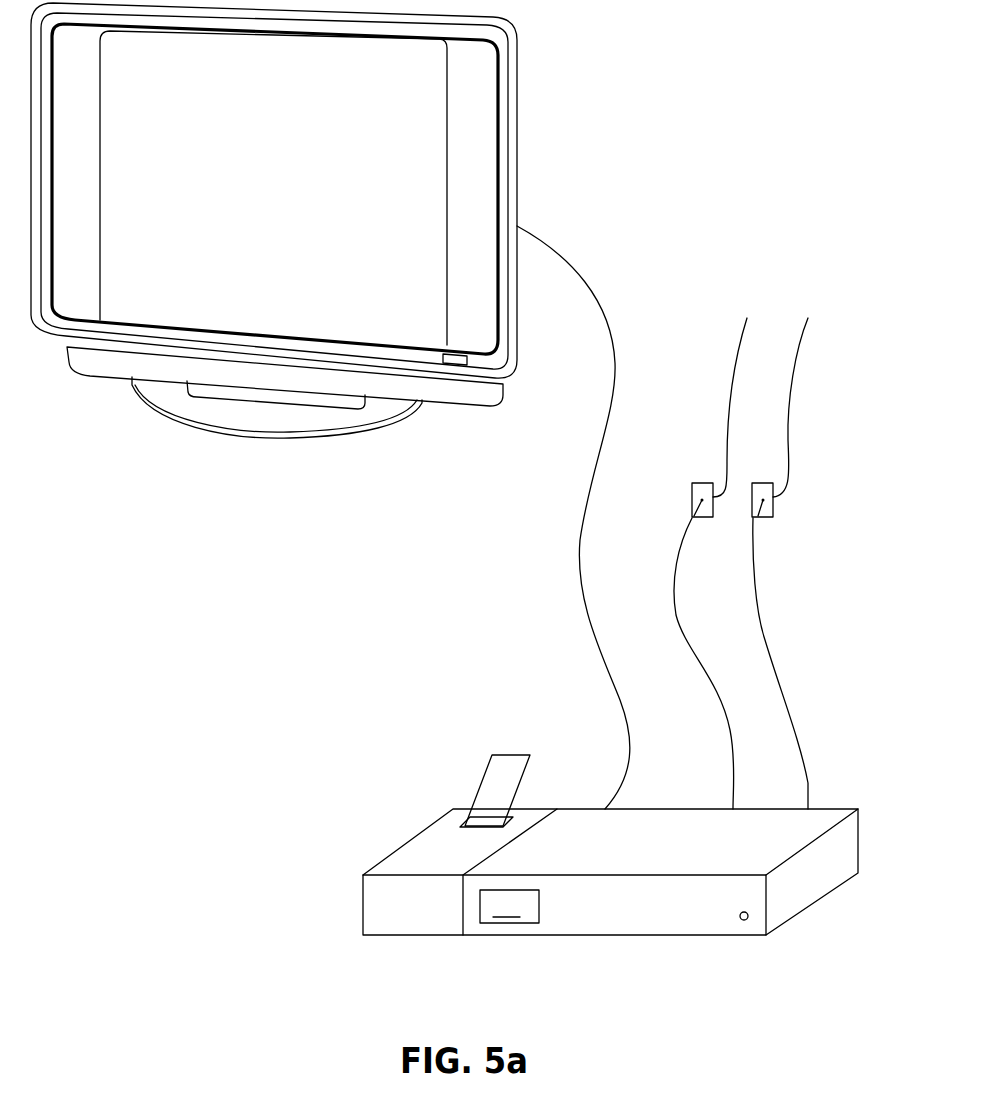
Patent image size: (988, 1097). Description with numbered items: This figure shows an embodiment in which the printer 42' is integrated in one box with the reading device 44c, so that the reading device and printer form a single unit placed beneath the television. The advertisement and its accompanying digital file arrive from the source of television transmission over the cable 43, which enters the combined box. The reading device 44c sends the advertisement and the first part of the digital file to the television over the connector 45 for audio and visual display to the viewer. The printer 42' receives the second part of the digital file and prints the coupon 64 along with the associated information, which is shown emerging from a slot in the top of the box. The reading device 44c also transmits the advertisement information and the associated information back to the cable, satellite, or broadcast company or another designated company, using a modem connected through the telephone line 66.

The connector 45 is at (562, 466).
The telephone line 66 is at (710, 368).
The cable 43 is at (816, 386).
The printer 42' is at (610, 905).
The coupon 64 is at (490, 766).
The reading device 44c is at (749, 930).